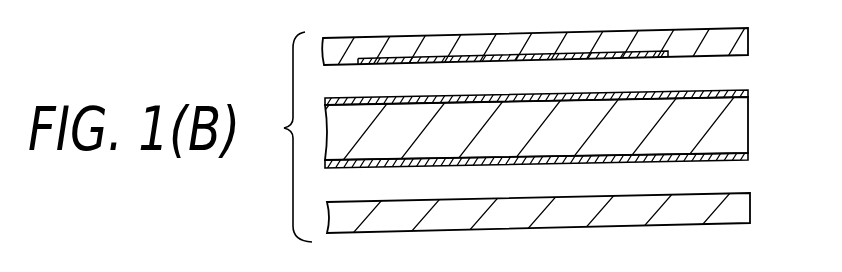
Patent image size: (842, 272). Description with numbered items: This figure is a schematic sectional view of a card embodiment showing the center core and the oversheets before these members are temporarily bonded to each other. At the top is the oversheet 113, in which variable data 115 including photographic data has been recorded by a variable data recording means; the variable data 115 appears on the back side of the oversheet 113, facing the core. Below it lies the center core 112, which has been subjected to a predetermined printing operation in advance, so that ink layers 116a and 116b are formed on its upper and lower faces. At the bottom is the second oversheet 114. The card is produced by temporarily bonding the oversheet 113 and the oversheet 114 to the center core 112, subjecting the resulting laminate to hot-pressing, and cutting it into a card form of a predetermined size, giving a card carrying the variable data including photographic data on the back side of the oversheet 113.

The center core 112 is at (740, 130).
The oversheet 113 is at (745, 40).
The oversheet 114 is at (745, 211).
The variable data 115 is at (615, 58).
The ink layer 116a is at (748, 93).
The ink layer 116b is at (748, 157).